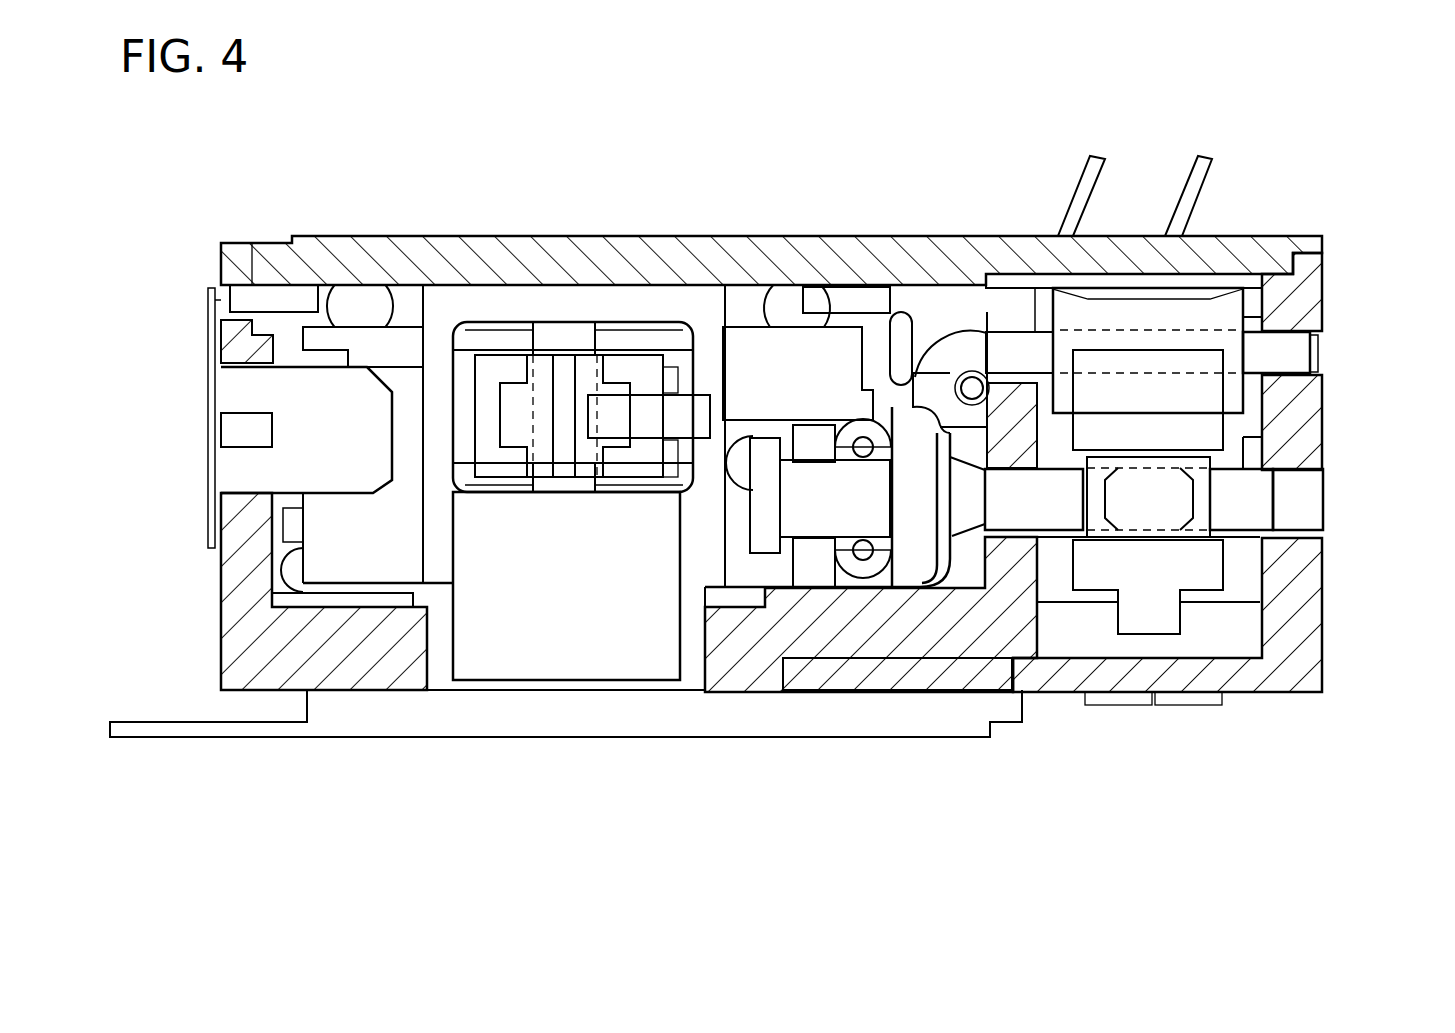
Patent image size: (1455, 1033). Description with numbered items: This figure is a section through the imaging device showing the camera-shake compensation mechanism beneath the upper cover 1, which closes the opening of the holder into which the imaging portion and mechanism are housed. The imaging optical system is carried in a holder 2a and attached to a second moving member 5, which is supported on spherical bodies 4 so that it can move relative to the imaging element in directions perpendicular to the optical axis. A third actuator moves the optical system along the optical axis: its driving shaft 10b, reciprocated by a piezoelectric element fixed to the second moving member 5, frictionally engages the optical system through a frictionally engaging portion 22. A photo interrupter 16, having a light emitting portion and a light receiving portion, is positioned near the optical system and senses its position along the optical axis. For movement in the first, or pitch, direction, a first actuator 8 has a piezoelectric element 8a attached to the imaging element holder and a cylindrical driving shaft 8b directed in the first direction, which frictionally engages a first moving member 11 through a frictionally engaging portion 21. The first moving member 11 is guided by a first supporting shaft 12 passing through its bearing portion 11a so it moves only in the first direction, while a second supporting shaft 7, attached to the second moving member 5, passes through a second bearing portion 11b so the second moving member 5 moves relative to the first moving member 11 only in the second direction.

The upper cover 1 is at (405, 247).
The holder 2a is at (390, 371).
The spherical bodies 4 is at (358, 302).
The second moving member 5 is at (608, 302).
The second supporting shaft 7 is at (968, 388).
The first actuator 8 is at (880, 587).
The piezoelectric element 8a is at (825, 503).
The driving shaft 8b is at (1055, 510).
The driving shaft 10b is at (572, 335).
The first moving member 11 is at (1210, 385).
The bearing portion 11a is at (1132, 313).
The bearing portion 11b is at (947, 355).
The first supporting shaft 12 is at (1280, 340).
The photo interrupter 16 is at (290, 460).
The frictionally engaging portion 21 is at (1148, 505).
The frictionally engaging portion 22 is at (612, 413).